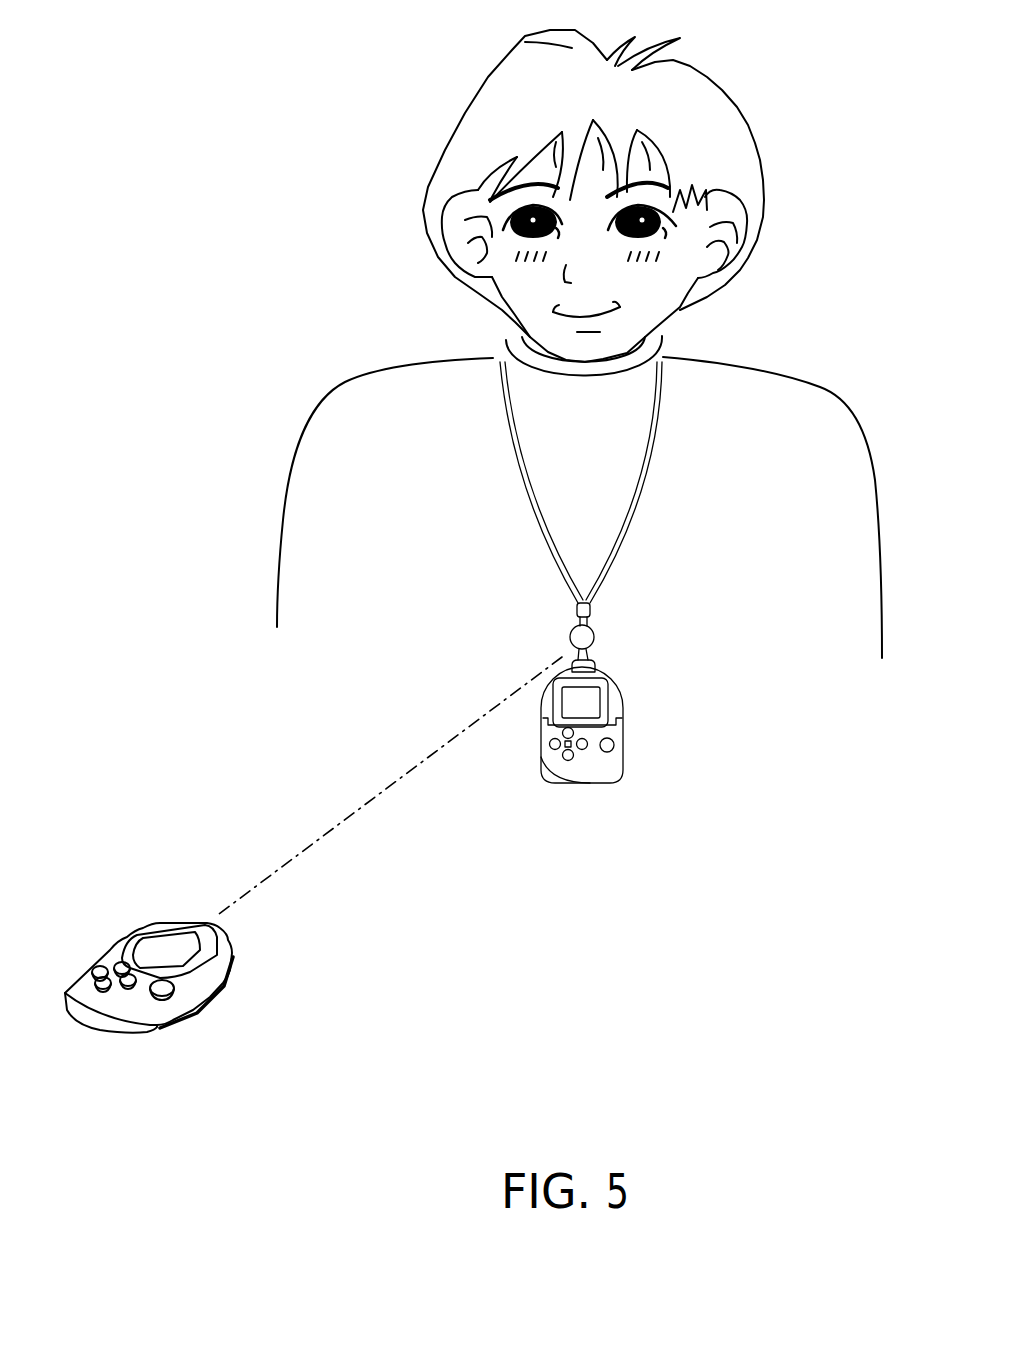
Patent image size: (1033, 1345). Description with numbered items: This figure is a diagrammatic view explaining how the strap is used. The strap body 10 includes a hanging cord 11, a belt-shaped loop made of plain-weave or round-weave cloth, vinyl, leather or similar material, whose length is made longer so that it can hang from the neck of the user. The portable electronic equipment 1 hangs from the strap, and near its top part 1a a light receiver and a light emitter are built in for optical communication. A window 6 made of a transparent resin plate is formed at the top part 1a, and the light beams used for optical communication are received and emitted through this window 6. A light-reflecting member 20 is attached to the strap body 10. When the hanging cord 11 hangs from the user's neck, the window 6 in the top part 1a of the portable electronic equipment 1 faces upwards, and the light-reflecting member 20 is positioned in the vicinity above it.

The portable electronic equipment 1 is at (628, 733).
The top part 1a is at (596, 666).
The window 6 is at (574, 662).
The strap body 10 is at (657, 460).
The hanging cord 11 is at (630, 520).
The light-reflecting member 20 is at (596, 637).